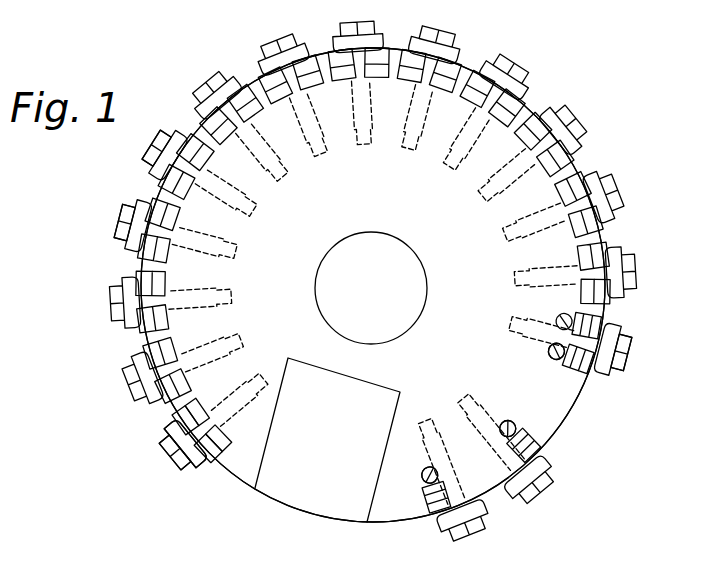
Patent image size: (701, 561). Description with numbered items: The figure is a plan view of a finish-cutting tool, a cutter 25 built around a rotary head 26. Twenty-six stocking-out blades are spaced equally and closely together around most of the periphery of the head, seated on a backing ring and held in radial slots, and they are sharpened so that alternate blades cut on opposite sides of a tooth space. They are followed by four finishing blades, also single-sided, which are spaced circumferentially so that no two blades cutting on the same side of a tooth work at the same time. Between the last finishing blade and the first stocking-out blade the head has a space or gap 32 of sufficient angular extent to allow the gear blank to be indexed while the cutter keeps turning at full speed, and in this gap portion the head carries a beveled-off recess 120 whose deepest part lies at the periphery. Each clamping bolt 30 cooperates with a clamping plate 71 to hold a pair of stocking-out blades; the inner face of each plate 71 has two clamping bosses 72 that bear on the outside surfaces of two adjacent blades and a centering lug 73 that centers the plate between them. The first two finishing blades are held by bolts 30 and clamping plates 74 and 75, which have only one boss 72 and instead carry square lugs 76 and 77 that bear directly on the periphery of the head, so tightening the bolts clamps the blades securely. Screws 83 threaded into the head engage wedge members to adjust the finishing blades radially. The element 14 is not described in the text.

The cutter 25 is at (409, 285).
The rotary head 26 is at (386, 288).
The space or gap 32 is at (387, 510).
The recess 120 is at (287, 490).
The tool bolt 14 is at (497, 418).
The screw 83 is at (553, 360).
The clamping plate 71 is at (153, 167).
The clamping boss 72 is at (175, 418).
The centering lug 73 is at (172, 460).
The clamping bolt 30 is at (163, 437).
The clamping plate 74 is at (507, 507).
The clamping plate 75 is at (477, 527).
The square lug 76 is at (476, 487).
The square lug 77 is at (478, 493).